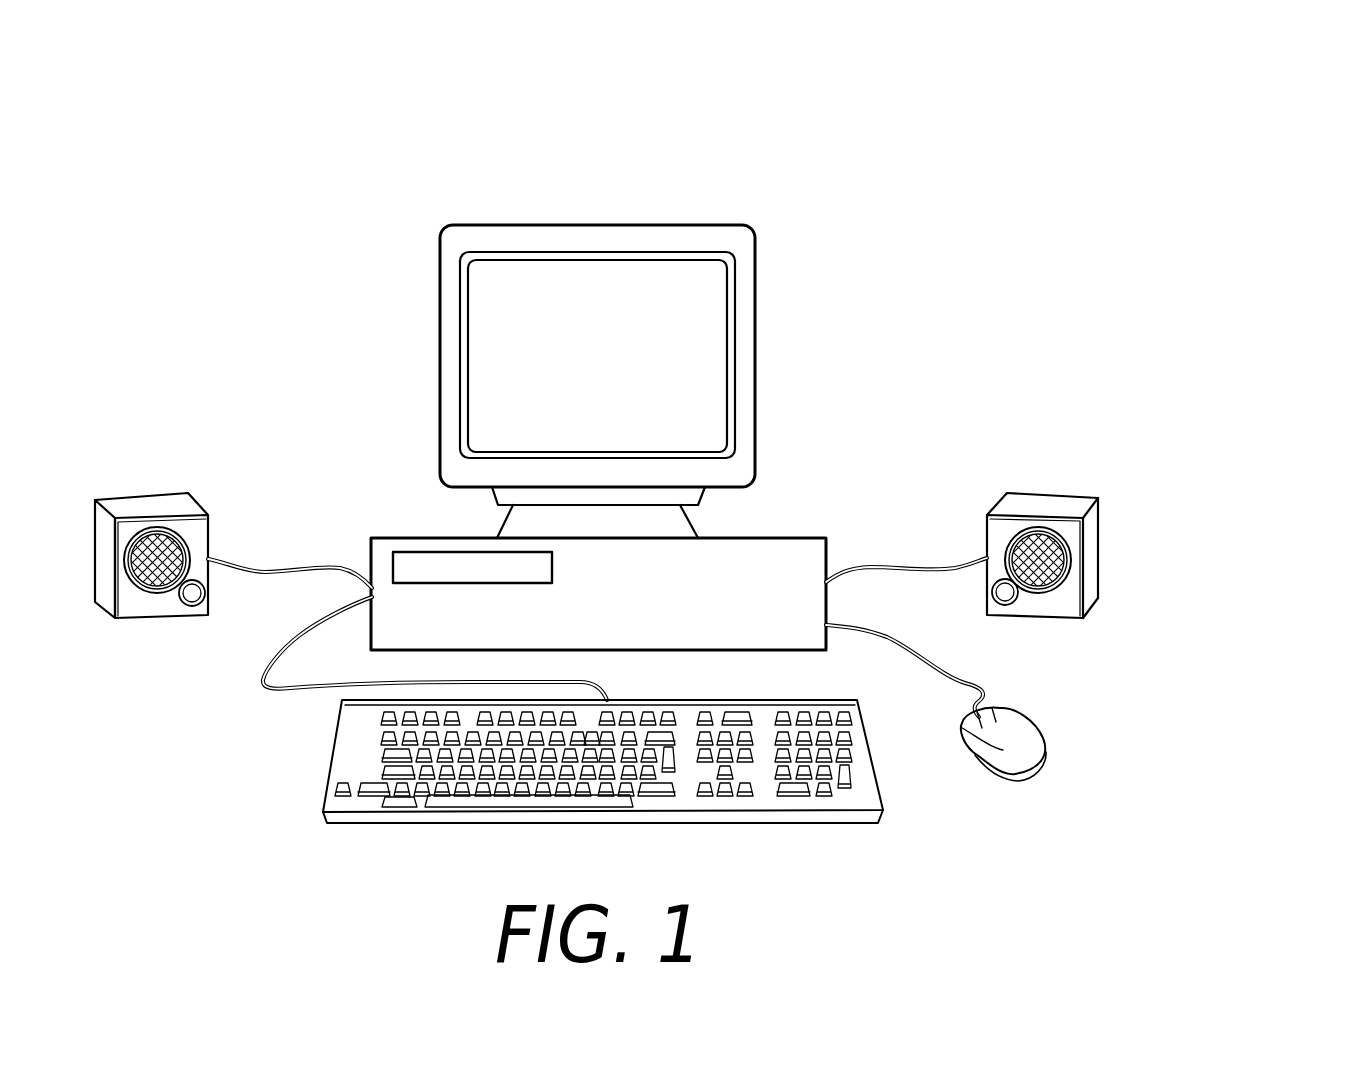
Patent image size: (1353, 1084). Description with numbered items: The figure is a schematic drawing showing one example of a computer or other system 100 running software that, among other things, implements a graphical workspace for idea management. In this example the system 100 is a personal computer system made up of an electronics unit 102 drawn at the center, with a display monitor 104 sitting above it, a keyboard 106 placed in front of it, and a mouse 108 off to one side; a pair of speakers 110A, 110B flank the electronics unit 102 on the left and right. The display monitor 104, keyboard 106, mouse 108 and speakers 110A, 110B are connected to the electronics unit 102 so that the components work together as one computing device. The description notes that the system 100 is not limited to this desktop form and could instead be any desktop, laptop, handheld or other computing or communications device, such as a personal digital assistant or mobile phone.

The system 100 is at (1207, 140).
The electronics unit 102 is at (797, 538).
The display monitor 104 is at (717, 225).
The keyboard 106 is at (330, 768).
The mouse 108 is at (1033, 725).
The speaker 110A is at (163, 493).
The speaker 110B is at (1053, 493).